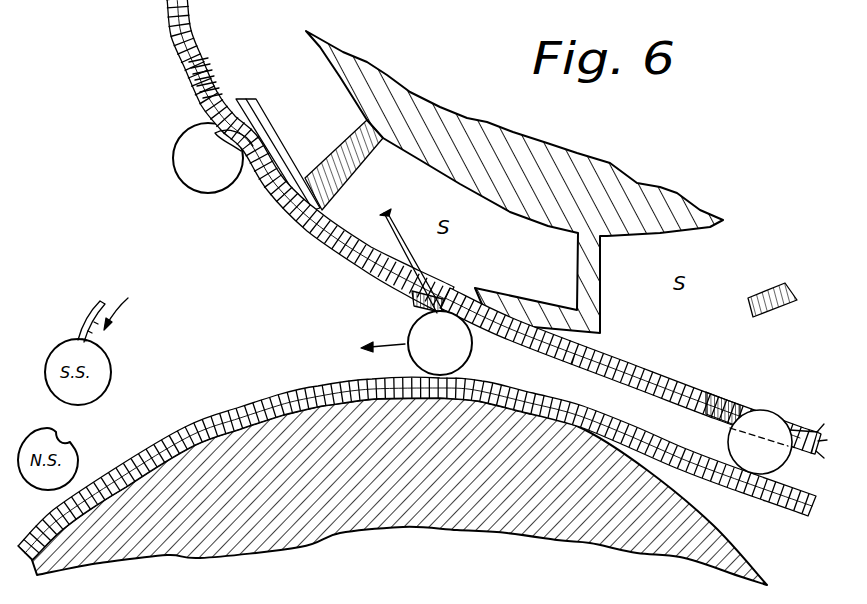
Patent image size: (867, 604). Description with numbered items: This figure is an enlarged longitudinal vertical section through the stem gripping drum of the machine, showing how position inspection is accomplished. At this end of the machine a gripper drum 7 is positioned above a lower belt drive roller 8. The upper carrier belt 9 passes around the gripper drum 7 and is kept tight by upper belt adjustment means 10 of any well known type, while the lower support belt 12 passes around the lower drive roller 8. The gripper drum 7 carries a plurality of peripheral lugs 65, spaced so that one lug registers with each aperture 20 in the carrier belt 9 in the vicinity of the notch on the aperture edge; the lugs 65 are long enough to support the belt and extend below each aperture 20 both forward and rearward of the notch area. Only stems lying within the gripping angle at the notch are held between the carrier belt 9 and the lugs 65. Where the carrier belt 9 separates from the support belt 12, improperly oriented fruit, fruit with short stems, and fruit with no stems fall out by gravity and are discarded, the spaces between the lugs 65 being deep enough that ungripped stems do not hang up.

The gripper drum 7 is at (158, 207).
The lower belt drive roller 8 is at (401, 470).
The upper carrier belt 9 is at (174, 30).
The upper belt adjustment means 10 is at (440, 343).
The lower support belt 12 is at (204, 420).
The aperture 20 is at (200, 76).
The peripheral lugs 65 is at (233, 101).